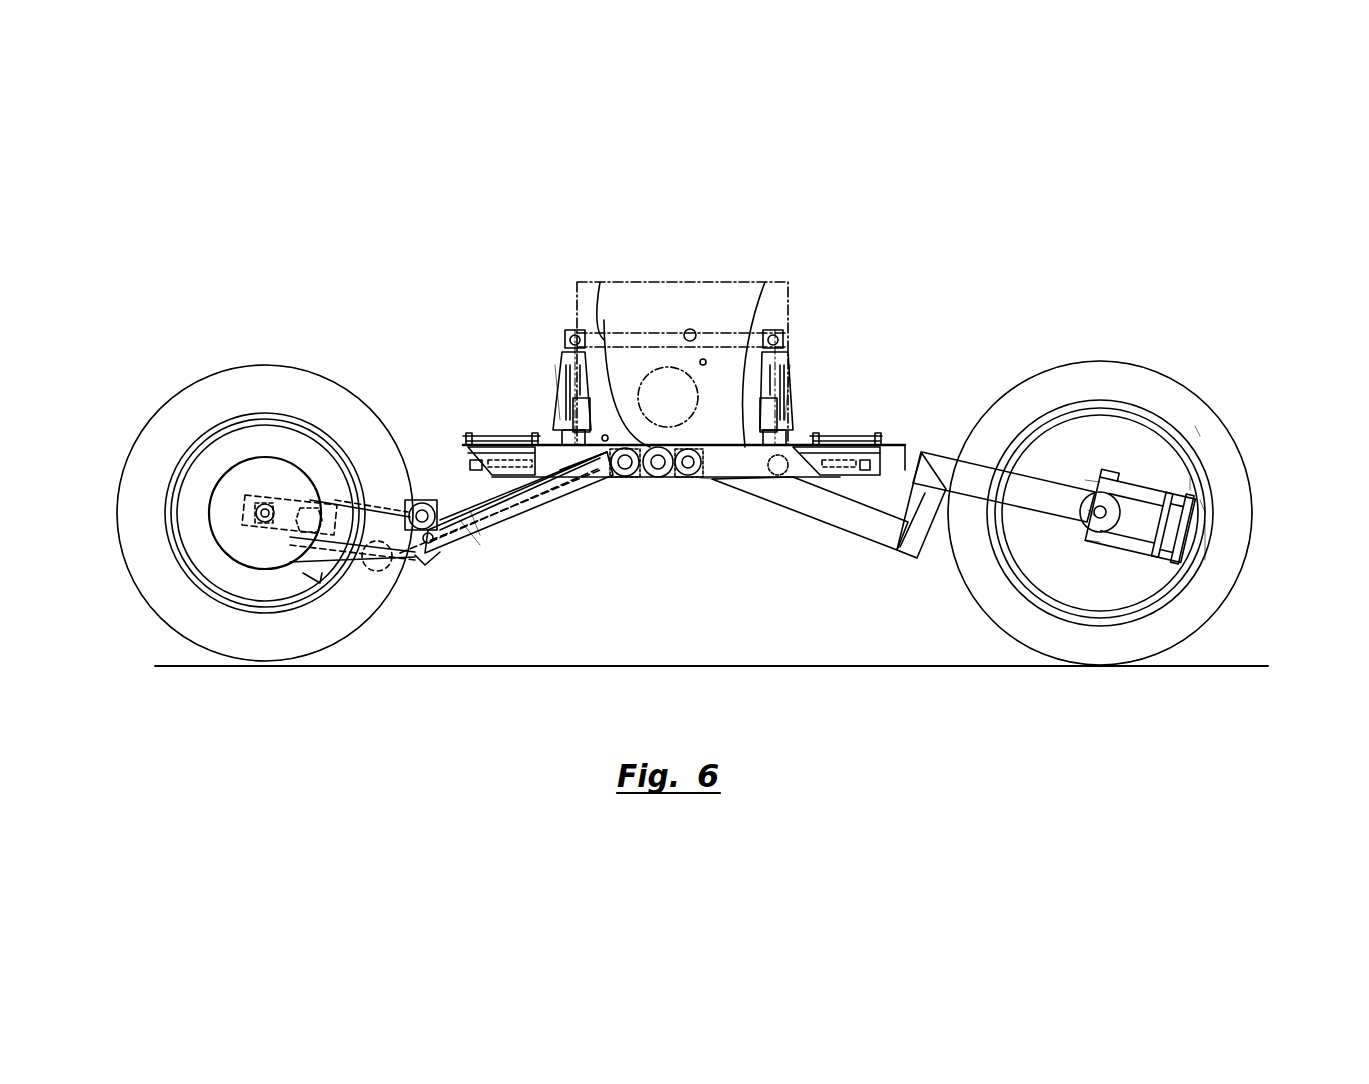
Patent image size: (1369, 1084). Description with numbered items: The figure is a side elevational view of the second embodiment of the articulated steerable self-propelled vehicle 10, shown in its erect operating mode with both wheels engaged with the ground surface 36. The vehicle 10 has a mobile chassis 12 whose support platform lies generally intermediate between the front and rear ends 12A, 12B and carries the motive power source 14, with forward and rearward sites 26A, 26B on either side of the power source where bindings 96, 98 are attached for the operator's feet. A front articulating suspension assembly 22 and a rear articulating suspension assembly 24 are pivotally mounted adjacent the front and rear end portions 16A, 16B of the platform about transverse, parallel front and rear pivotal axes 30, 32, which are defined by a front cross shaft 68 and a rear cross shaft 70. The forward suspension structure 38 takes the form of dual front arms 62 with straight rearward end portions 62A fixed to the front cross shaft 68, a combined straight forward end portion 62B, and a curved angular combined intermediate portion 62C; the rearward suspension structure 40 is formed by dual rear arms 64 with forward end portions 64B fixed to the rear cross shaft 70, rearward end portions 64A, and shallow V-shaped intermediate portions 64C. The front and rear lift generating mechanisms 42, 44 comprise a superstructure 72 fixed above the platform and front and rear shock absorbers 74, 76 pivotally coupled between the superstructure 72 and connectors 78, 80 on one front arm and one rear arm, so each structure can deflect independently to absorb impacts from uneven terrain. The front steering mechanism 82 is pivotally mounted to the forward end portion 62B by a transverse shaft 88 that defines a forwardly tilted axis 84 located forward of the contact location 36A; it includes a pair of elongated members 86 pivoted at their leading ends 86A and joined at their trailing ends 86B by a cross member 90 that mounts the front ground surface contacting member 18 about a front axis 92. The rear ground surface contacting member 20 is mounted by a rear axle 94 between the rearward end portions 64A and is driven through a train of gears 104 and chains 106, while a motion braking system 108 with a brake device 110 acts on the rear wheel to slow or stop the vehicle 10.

The steerable self-propelled vehicle 10 is at (693, 348).
The articulated steerable mobile chassis 12 is at (684, 554).
The front end of the chassis 12A is at (1106, 508).
The rear end of the chassis 12B is at (265, 506).
The motive power source 14 is at (682, 339).
The front end portion of the support platform 16A is at (872, 427).
The rear end portion of the support platform 16B is at (474, 427).
The front ground surface contacting member 18 is at (1100, 489).
The rear ground surface contacting member 20 is at (250, 513).
The front articulating suspension assembly 22 is at (889, 604).
The rear articulating suspension assembly 24 is at (492, 589).
The forward site 26A is at (846, 401).
The rearward site 26B is at (502, 400).
The front pivotal axis 30 is at (697, 497).
The rear pivotal axis 32 is at (662, 488).
The ground surface 36 is at (930, 667).
The ground contact location 36A is at (1106, 667).
The forward suspension structure 38 is at (946, 392).
The rearward suspension structure 40 is at (460, 502).
The front lift generating mechanism 42 is at (848, 349).
The rear lift generating mechanism 44 is at (501, 350).
The dual front arms 62 is at (860, 520).
The rearward end portions of the dual front arms 62A is at (780, 492).
The combined forward end portion of the dual front arms 62B is at (1023, 495).
The combined intermediate portion of the dual front arms 62C is at (925, 562).
The dual rear arms 64 is at (500, 530).
The rearward end portions of the dual rear arms 64A is at (335, 556).
The forward end portions of the dual rear arms 64B is at (590, 500).
The intermediate portions of the dual rear arms 64C is at (430, 567).
The front cross shaft 68 is at (693, 448).
The rear cross shaft 70 is at (640, 447).
The superstructure 72 is at (600, 282).
The front shock absorber 74 is at (793, 362).
The rear shock absorber 76 is at (560, 370).
The connector 78 is at (778, 475).
The connector 80 is at (630, 480).
The front steering mechanism 82 is at (1245, 410).
The steering axis 84 is at (1253, 471).
The elongated member 86 is at (1190, 507).
The leading end of the elongated member 86A is at (1267, 545).
The trailing end of the elongated member 86B is at (1095, 545).
The transverse shaft 88 is at (1258, 500).
The cross member 90 is at (1057, 531).
The front axis 92 is at (1112, 481).
The rear axle 94 is at (203, 519).
The binding 96 is at (861, 390).
The binding 98 is at (500, 389).
The train of gears 104 is at (551, 421).
The chains 106 is at (520, 556).
The motion braking system 108 is at (277, 445).
The brake device 110 is at (199, 565).